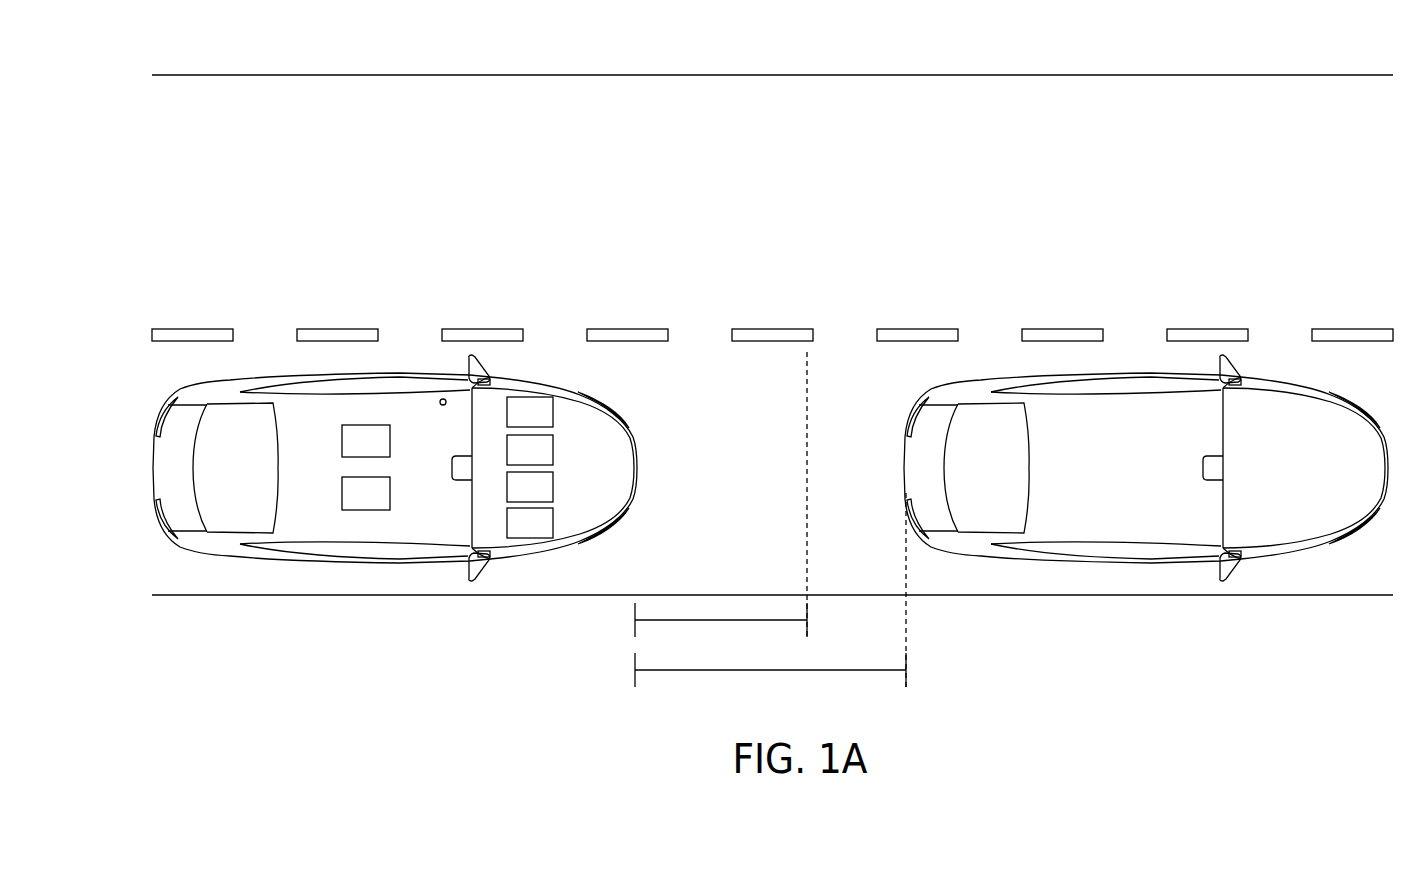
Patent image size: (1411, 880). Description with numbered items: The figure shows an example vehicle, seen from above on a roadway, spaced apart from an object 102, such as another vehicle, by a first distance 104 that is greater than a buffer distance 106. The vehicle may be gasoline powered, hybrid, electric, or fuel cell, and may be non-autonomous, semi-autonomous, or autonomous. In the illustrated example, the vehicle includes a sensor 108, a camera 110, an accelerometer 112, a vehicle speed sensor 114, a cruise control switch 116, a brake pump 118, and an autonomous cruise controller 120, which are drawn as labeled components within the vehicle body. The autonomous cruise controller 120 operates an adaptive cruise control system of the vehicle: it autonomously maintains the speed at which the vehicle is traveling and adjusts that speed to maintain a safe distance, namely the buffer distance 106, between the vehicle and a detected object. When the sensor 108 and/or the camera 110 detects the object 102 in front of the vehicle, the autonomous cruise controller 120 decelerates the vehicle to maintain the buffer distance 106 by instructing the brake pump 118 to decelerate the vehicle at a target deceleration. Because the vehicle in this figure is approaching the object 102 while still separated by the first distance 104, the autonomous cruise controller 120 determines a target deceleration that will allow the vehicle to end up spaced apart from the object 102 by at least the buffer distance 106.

The object 102 is at (1105, 481).
The first distance 104 is at (770, 671).
The buffer distance 106 is at (720, 621).
The sensor 108 is at (514, 423).
The camera 110 is at (514, 461).
The accelerometer 112 is at (350, 453).
The vehicle speed sensor 114 is at (350, 505).
The cruise control switch 116 is at (443, 405).
The brake pump 118 is at (514, 498).
The autonomous cruise controller 120 is at (514, 534).